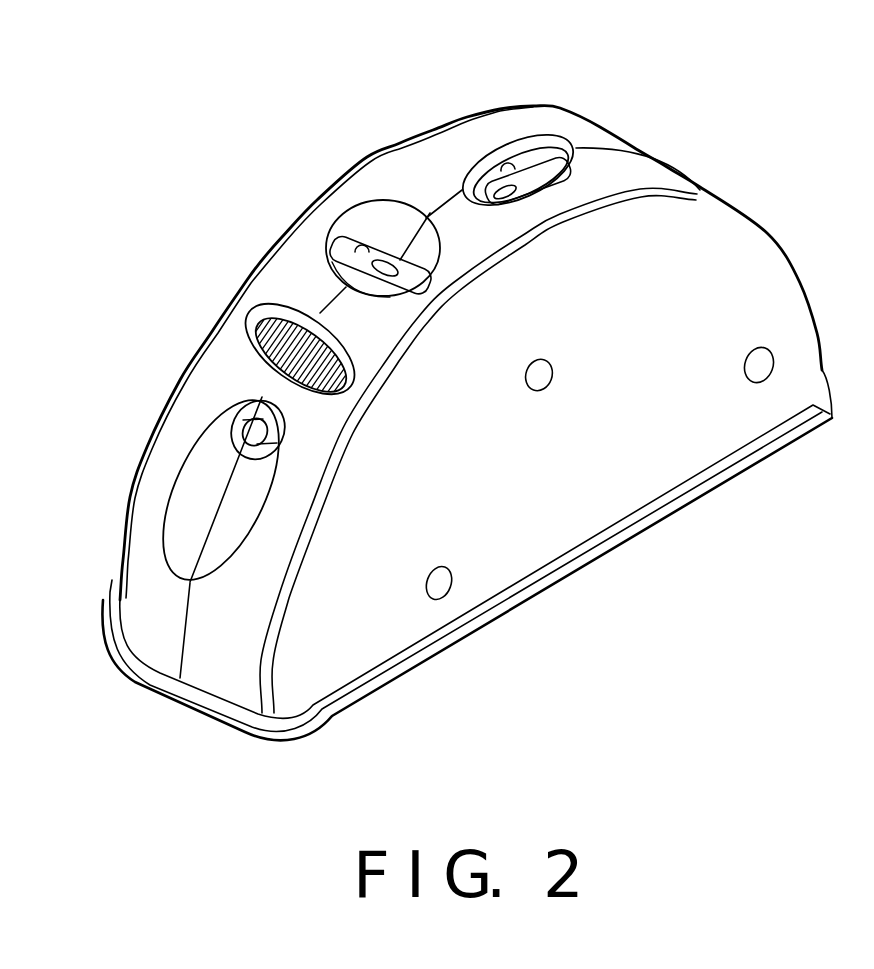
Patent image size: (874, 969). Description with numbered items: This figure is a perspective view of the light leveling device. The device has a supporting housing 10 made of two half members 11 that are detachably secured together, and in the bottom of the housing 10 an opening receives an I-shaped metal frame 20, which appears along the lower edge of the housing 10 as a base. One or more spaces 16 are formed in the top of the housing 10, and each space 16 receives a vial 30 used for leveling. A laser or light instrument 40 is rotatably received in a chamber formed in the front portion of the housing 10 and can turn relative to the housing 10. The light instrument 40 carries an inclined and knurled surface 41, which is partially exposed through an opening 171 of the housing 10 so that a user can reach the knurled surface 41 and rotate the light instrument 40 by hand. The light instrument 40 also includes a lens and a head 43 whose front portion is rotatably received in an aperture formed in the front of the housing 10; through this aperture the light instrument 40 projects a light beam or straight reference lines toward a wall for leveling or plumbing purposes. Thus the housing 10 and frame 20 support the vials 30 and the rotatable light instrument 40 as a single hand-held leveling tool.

The supporting housing 10 is at (606, 98).
The half members 11 is at (463, 127).
The spaces 16 is at (377, 250).
The I-shaped metal frame 20 is at (433, 657).
The vials 30 is at (333, 242).
The light instrument 40 is at (289, 322).
The inclined and knurled surface 41 is at (256, 347).
The head 43 is at (247, 432).
The opening 171 is at (252, 319).